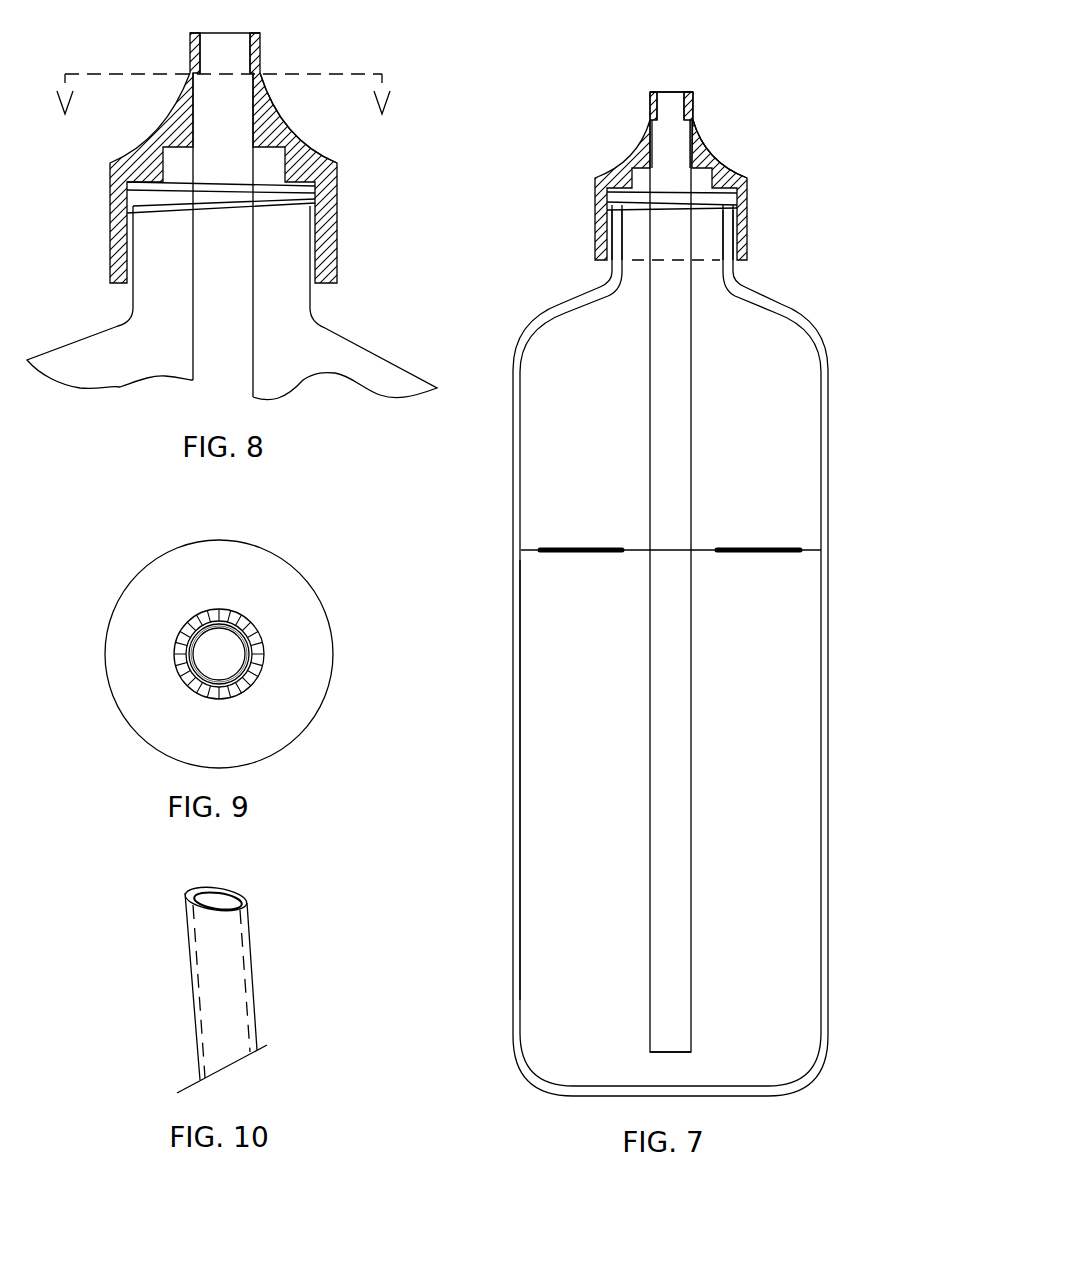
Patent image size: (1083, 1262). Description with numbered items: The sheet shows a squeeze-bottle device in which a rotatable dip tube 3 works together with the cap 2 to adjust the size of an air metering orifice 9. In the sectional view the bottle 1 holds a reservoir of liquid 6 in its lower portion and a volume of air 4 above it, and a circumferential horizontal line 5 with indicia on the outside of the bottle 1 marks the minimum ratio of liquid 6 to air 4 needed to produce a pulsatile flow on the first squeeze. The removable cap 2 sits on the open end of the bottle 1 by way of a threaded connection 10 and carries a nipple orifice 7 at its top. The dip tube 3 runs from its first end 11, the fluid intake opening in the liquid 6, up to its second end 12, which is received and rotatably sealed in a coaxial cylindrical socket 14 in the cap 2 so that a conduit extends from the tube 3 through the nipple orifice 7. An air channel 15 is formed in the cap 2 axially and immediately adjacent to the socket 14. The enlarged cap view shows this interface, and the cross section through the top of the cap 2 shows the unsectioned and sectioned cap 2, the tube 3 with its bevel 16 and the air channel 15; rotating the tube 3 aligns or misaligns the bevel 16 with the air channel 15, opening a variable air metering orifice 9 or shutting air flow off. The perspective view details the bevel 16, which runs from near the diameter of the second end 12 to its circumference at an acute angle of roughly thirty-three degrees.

In FIG. 7, the bottle 1 is at (828, 790).
In FIG. 7, the cap 2 is at (742, 213).
In FIG. 8, the cap 2 is at (337, 250).
In FIG. 9, the cap 2 is at (260, 673).
In FIG. 7, the dip tube 3 is at (650, 512).
In FIG. 8, the dip tube 3 is at (193, 323).
In FIG. 9, the dip tube 3 is at (230, 697).
In FIG. 10, the dip tube 3 is at (253, 965).
In FIG. 7, the volume of air 4 is at (775, 465).
In FIG. 8, the volume of air 4 is at (133, 357).
In FIG. 7, the horizontal line 5 is at (580, 556).
In FIG. 7, the reservoir of liquid 6 is at (570, 840).
In FIG. 7, the nipple orifice 7 is at (675, 92).
In FIG. 8, the air metering orifice 9 is at (505, 139).
In FIG. 7, the threaded connection 10 is at (682, 213).
In FIG. 7, the tube first end 11 is at (650, 1052).
In FIG. 7, the tube second end 12 is at (678, 117).
In FIG. 8, the tube second end 12 is at (223, 117).
In FIG. 7, the socket 14 is at (652, 155).
In FIG. 7, the air channel 15 is at (693, 147).
In FIG. 8, the air channel 15 is at (263, 125).
In FIG. 9, the air channel 15 is at (260, 637).
In FIG. 9, the bevel 16 is at (188, 690).
In FIG. 10, the bevel 16 is at (243, 890).